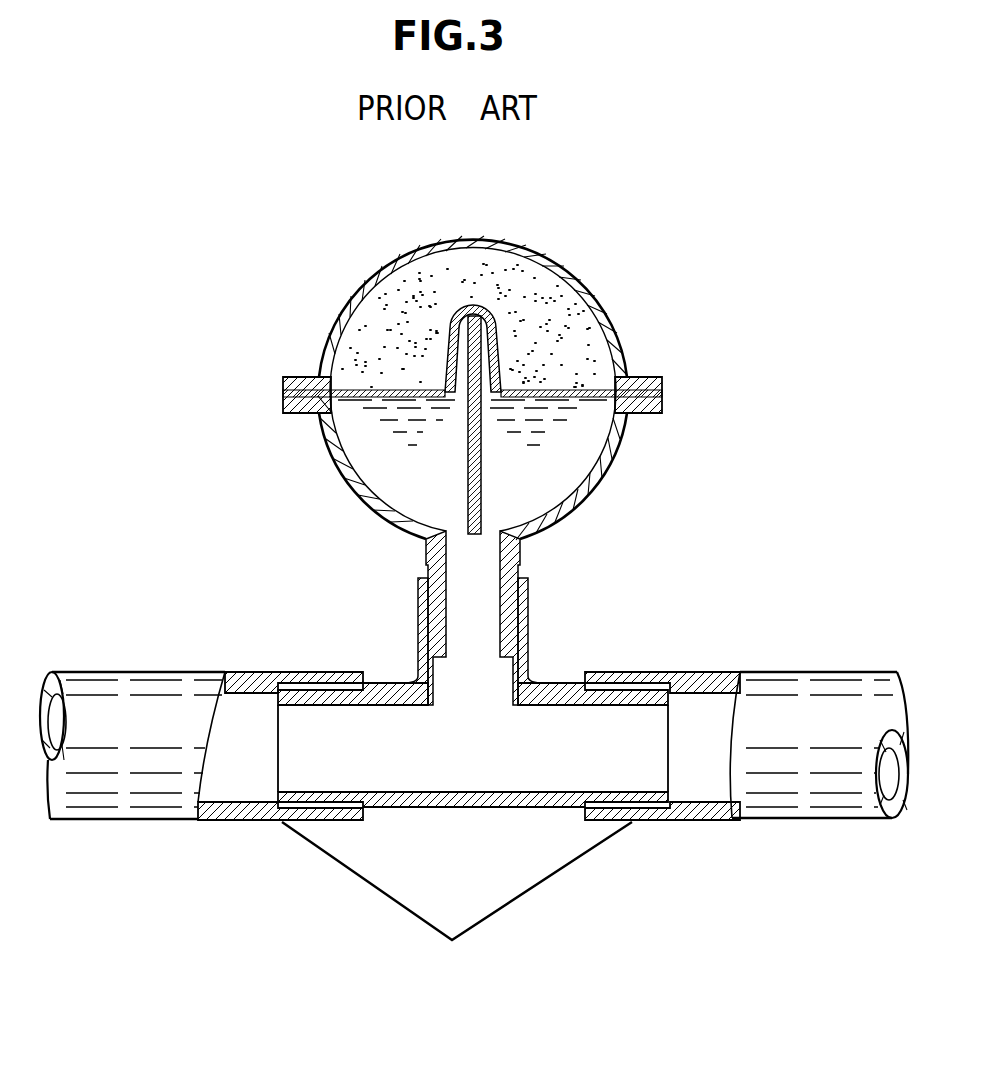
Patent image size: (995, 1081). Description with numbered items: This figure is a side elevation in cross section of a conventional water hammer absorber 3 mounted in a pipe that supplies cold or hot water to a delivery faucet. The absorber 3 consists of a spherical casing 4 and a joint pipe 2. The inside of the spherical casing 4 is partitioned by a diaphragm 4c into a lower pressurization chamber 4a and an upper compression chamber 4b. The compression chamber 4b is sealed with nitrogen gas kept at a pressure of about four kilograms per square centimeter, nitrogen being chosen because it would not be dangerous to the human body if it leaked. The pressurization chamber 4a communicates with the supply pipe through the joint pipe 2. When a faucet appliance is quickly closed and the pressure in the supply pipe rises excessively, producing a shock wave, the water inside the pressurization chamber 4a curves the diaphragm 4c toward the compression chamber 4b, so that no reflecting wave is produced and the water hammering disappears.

The joint pipe 2 is at (553, 683).
The water hammer absorber 3 is at (643, 461).
The spherical casing 4 is at (558, 272).
The pressurization chamber 4a is at (372, 457).
The compression chamber 4b is at (365, 337).
The diaphragm 4c is at (502, 367).